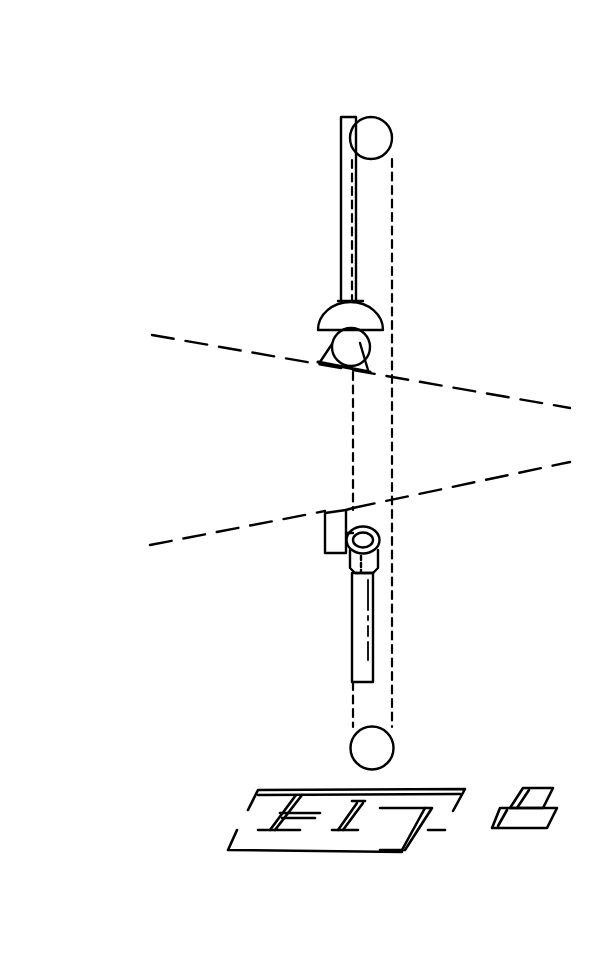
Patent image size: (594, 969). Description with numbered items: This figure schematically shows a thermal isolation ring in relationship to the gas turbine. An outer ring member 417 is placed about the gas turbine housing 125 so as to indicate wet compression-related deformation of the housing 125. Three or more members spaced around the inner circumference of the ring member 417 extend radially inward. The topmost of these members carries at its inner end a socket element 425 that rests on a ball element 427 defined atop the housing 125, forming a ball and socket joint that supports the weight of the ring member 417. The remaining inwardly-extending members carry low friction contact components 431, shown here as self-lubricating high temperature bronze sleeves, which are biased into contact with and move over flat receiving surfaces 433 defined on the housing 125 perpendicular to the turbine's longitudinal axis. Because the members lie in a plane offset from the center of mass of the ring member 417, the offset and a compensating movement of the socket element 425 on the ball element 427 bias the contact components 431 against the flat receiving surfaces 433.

The outer ring member 417 is at (386, 112).
The socket element 425 is at (372, 308).
The ball element 427 is at (378, 338).
The gas turbine housing 125 is at (287, 360).
The flat receiving surfaces 433 is at (333, 535).
The low friction contact components 431 is at (380, 537).